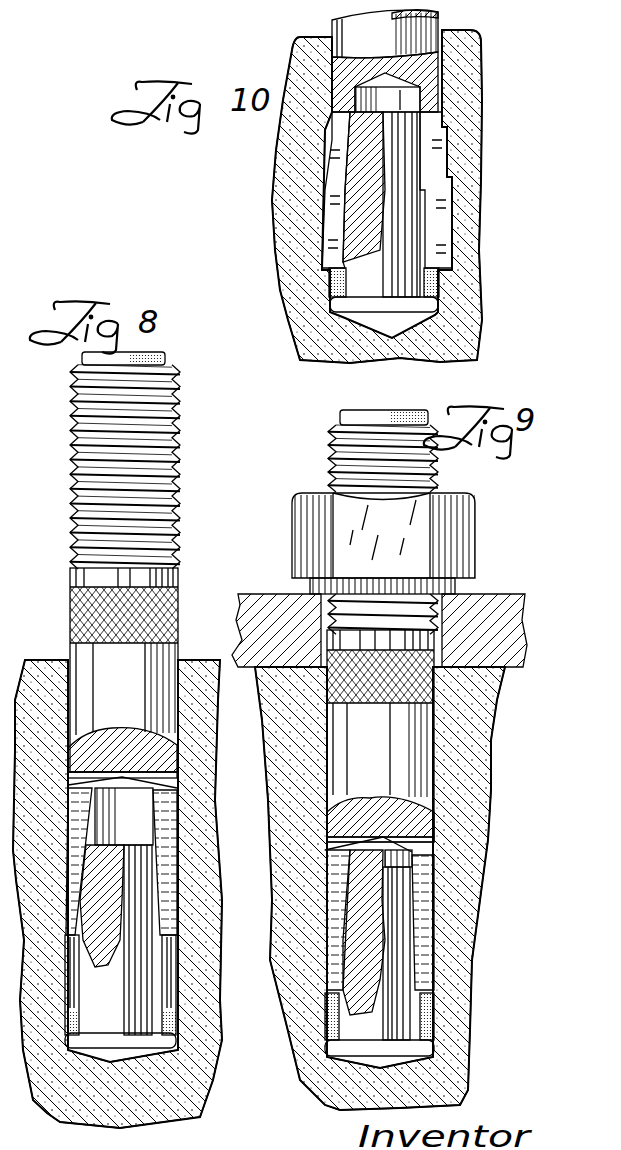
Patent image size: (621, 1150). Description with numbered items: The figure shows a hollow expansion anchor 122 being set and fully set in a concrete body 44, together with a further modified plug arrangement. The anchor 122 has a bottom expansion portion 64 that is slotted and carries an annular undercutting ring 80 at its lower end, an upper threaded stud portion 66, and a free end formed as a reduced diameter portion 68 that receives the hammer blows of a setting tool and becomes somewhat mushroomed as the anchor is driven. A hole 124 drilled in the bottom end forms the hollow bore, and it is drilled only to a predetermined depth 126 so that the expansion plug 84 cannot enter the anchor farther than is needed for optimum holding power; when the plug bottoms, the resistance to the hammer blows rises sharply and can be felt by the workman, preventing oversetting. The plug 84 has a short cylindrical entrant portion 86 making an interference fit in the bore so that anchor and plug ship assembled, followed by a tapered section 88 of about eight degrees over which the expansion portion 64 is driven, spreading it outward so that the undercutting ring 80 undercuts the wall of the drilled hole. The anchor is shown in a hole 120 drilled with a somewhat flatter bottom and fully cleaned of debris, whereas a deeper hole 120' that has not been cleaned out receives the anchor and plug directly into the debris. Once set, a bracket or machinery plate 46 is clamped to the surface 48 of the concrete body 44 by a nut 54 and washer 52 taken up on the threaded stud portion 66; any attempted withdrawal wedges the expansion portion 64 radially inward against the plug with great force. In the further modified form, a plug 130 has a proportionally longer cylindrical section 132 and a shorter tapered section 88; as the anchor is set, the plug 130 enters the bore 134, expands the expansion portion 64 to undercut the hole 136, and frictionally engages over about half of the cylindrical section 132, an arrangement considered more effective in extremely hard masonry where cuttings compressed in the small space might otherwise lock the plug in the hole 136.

In FIG. 8, the concrete body 44 is at (198, 720).
In FIG. 9, the concrete body 44 is at (487, 761).
In FIG. 9, the bracket or machinery plate 46 is at (490, 604).
In FIG. 8, the surface 48 is at (48, 662).
In FIG. 9, the surface 48 is at (258, 668).
In FIG. 9, the washer 52 is at (440, 580).
In FIG. 9, the nut 54 is at (470, 524).
In FIG. 10, the bottom expansion portion 64 is at (483, 172).
In FIG. 8, the upper threaded stud portion 66 is at (70, 498).
In FIG. 9, the upper threaded stud portion 66 is at (330, 458).
In FIG. 8, the reduced diameter portion 68 is at (166, 355).
In FIG. 9, the reduced diameter portion 68 is at (340, 418).
In FIG. 8, the annular undercutting ring 80 is at (153, 960).
In FIG. 9, the expansion plug 84 is at (412, 948).
In FIG. 8, the cylindrical entrant portion 86 is at (153, 852).
In FIG. 9, the cylindrical entrant portion 86 is at (412, 862).
In FIG. 10, the tapered section 88 is at (407, 174).
In FIG. 9, the hole 120 is at (434, 1016).
In FIG. 8, the hole 120' is at (161, 985).
In FIG. 8, the anchor 122 is at (70, 603).
In FIG. 9, the anchor 122 is at (250, 648).
In FIG. 8, the hole 124 is at (138, 812).
In FIG. 9, the hole 124 is at (403, 846).
In FIG. 8, the predetermined depth 126 is at (182, 771).
In FIG. 9, the predetermined depth 126 is at (347, 850).
In FIG. 10, the plug 130 is at (362, 285).
In FIG. 10, the cylindrical section 132 is at (403, 252).
In FIG. 10, the bore 134 is at (405, 98).
In FIG. 10, the hole 136 is at (440, 279).